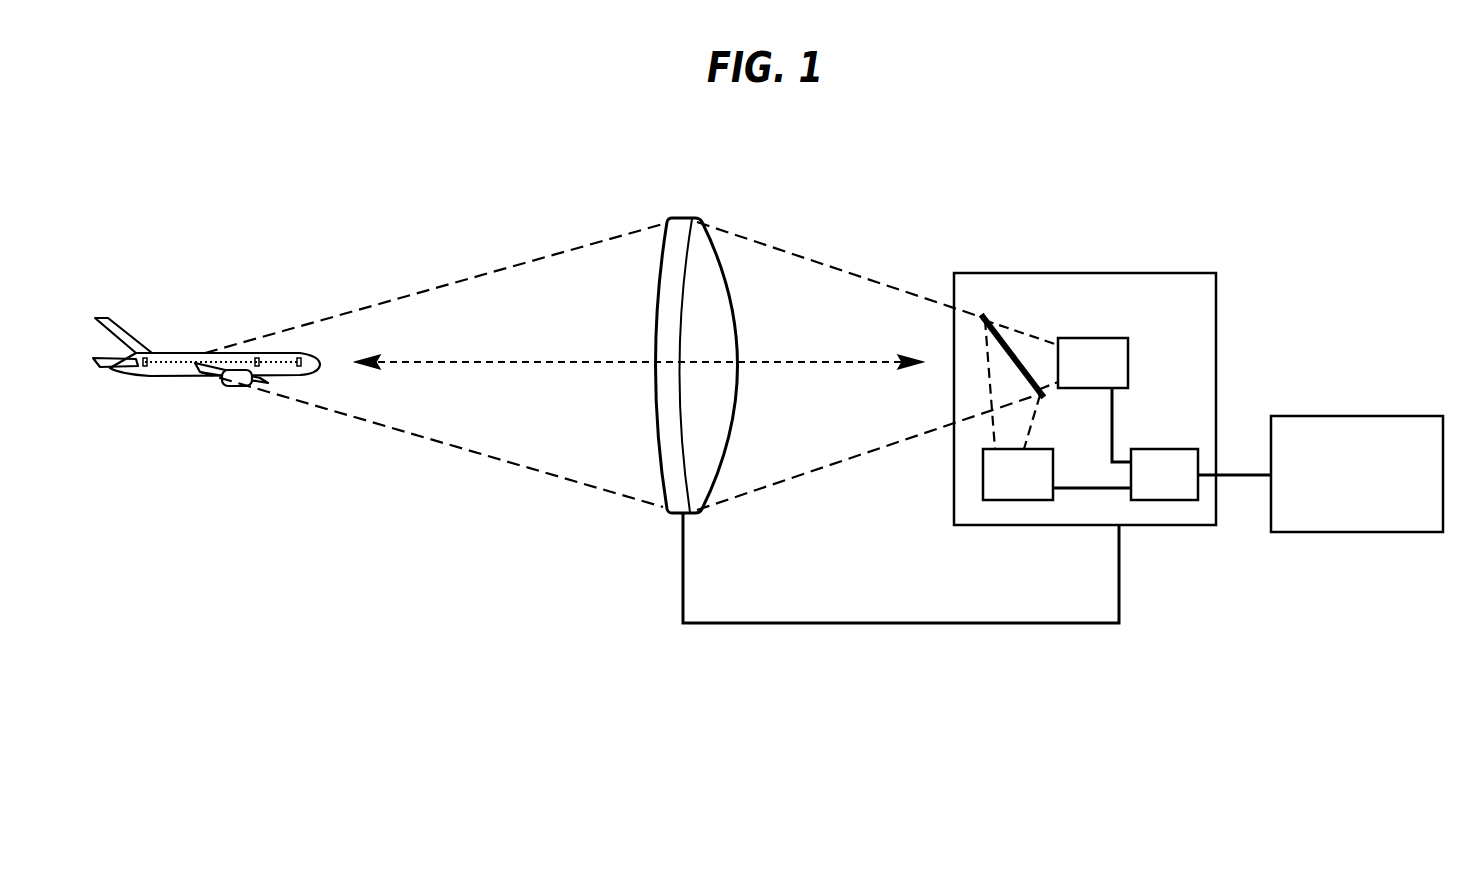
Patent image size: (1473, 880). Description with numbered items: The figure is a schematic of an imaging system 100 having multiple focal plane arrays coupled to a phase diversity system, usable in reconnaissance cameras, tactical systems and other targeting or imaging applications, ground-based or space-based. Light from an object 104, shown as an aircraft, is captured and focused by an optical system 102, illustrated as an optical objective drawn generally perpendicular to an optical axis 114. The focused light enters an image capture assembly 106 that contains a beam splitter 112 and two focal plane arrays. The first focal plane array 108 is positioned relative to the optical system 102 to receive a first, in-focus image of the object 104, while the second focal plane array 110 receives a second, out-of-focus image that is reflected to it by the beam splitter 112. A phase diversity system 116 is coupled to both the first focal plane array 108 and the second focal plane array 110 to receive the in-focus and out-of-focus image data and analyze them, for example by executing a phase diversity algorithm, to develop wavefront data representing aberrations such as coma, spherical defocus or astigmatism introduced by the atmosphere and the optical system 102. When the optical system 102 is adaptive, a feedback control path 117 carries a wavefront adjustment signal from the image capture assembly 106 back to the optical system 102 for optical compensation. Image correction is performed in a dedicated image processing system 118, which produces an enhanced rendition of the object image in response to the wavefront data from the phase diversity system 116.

The optical system 100 is at (884, 200).
The optical system 102 is at (686, 515).
The object 104 is at (151, 352).
The image capture assembly 106 is at (1121, 273).
The first focal plane array 108 is at (1128, 356).
The second focal plane array 110 is at (1015, 501).
The beam splitter 112 is at (988, 316).
The optical axis 114 is at (815, 366).
The phase diversity system 116 is at (1175, 501).
The feedback control path 117 is at (914, 625).
The image processing system 118 is at (1380, 416).